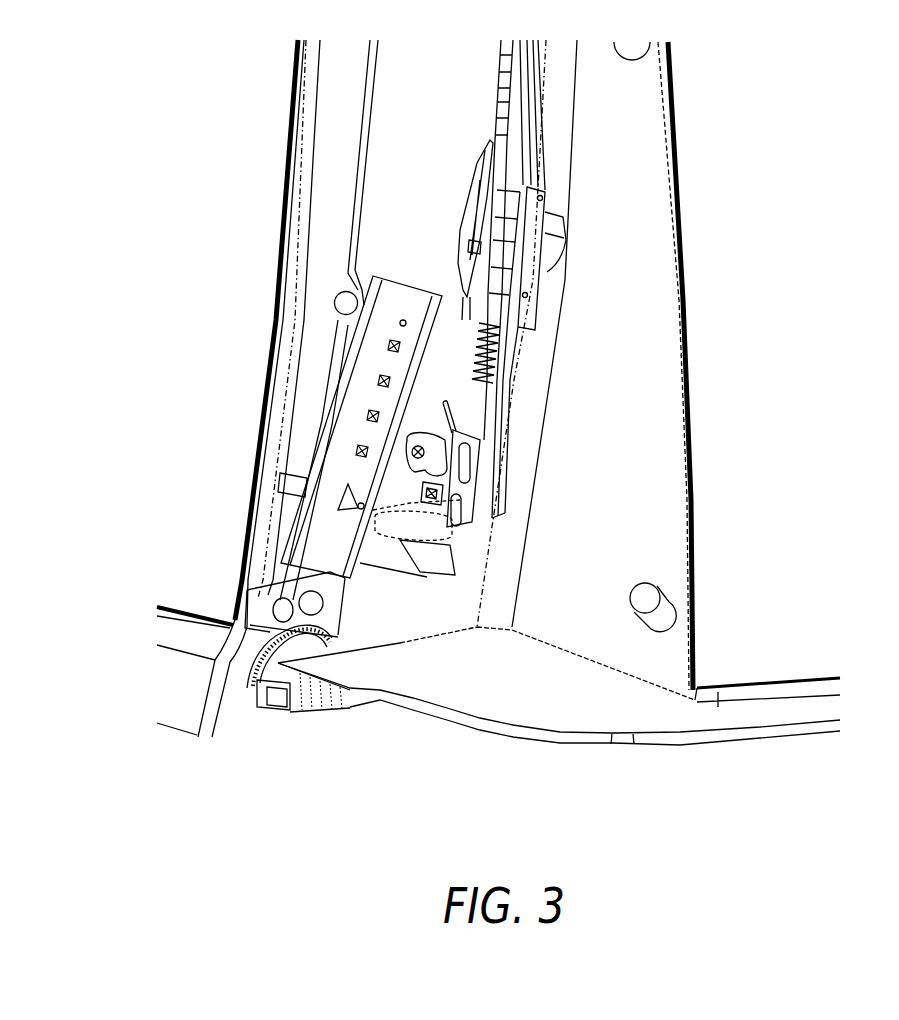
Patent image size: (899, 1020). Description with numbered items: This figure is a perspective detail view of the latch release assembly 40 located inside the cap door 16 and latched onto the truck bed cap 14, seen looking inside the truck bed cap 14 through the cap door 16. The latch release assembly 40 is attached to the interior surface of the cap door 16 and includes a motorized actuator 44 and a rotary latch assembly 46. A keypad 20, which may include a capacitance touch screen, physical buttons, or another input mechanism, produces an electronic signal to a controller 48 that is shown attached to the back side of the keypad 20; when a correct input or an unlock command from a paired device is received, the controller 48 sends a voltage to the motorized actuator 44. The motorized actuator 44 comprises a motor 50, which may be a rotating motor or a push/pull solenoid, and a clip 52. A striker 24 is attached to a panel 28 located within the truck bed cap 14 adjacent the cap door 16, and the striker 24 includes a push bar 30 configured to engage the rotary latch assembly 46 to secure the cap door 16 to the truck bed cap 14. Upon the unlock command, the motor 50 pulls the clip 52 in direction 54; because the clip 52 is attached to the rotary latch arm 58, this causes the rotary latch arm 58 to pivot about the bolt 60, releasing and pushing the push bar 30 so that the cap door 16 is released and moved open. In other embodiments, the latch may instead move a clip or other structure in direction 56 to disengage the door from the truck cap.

The truck bed cap 14 is at (153, 99).
The cap door 16 is at (834, 105).
The keypad 20 is at (397, 300).
The striker 24 is at (368, 521).
The panel 28 is at (328, 158).
The push bar 30 is at (413, 571).
The latch release assembly 40 is at (461, 140).
The motorized actuator 44 is at (540, 332).
The rotary latch assembly 46 is at (485, 477).
The controller 48 is at (344, 578).
The motor 50 is at (578, 231).
The clip 52 is at (439, 392).
The direction 54 is at (607, 460).
The direction 56 is at (612, 462).
The rotary latch arm 58 is at (440, 526).
The bolt 60 is at (417, 452).